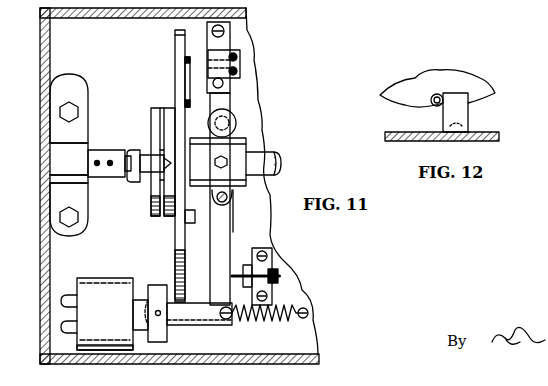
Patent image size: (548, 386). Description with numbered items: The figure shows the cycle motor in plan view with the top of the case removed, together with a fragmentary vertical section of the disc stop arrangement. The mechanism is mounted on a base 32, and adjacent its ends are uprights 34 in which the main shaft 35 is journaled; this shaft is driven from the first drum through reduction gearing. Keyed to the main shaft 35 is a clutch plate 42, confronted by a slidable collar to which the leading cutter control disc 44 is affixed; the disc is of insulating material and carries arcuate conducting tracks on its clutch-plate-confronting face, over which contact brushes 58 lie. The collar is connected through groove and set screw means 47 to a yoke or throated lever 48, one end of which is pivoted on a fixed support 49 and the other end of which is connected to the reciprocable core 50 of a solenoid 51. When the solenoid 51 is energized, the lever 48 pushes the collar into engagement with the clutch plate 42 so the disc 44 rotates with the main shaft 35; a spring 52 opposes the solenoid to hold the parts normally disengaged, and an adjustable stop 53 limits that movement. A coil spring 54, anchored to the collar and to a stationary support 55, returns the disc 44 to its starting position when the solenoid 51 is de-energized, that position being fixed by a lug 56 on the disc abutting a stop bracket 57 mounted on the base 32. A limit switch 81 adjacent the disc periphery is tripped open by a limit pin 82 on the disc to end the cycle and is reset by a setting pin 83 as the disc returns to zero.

In FIG. 11, the base 32 is at (128, 77).
In FIG. 11, the upright 34 is at (88, 145).
In FIG. 11, the main shaft 35 is at (276, 152).
In FIG. 11, the clutch plate 42 is at (152, 110).
In FIG. 11, the leading cutter control disc 44 is at (175, 48).
In FIG. 11, the groove and set screw means 47 is at (214, 162).
In FIG. 11, the yoke or throated lever 48 is at (230, 245).
In FIG. 11, the fixed support 49 is at (208, 90).
In FIG. 11, the reciprocable core 50 is at (170, 338).
In FIG. 11, the solenoid 51 is at (97, 280).
In FIG. 11, the spring 52 is at (272, 321).
In FIG. 11, the stop 53 is at (246, 272).
In FIG. 11, the coil spring 54 is at (234, 220).
In FIG. 11, the stationary support 55 is at (208, 68).
In FIG. 12, the lug 56 is at (432, 96).
In FIG. 12, the stop bracket 57 is at (470, 115).
In FIG. 11, the contact brush 58 is at (158, 170).
In FIG. 11, the limit switch 81 is at (236, 133).
In FIG. 11, the limit pin 82 is at (195, 222).
In FIG. 12, the setting pin 83 is at (431, 100).